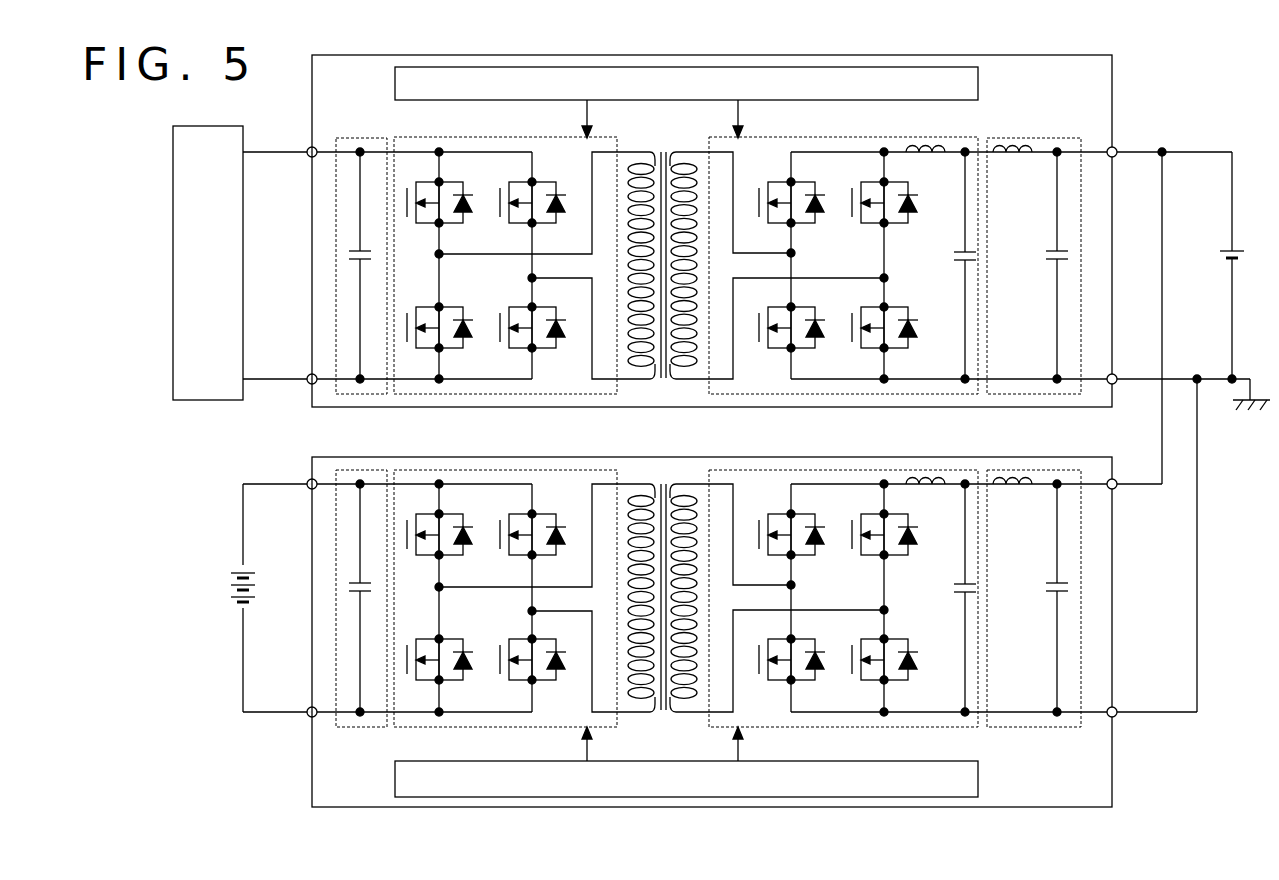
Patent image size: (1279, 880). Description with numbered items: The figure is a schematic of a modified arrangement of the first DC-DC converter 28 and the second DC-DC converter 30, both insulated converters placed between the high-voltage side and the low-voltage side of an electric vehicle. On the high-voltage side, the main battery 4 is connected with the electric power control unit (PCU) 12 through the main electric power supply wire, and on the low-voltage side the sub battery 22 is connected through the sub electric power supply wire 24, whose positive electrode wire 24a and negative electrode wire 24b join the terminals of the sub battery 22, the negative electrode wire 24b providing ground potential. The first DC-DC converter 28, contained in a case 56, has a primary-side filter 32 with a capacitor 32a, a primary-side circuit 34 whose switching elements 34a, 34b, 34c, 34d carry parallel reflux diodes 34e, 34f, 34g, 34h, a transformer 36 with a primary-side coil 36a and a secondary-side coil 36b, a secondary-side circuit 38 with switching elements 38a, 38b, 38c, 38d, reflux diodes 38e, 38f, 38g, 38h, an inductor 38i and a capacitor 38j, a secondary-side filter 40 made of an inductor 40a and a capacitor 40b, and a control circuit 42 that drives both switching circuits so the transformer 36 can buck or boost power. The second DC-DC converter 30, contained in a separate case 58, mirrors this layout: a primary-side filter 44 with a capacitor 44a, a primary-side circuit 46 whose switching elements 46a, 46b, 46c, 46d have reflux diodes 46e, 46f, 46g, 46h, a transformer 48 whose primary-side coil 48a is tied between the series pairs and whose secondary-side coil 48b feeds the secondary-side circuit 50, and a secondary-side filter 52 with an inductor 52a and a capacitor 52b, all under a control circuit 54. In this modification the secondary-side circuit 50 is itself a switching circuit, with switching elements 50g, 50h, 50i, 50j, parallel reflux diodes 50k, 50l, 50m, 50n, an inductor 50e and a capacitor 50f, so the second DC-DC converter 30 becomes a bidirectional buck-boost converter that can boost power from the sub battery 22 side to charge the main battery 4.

The main battery 4 is at (240, 568).
The electric power control unit (PCU) 12 is at (208, 126).
The sub battery 22 is at (1240, 251).
The sub electric power supply wire 24 is at (1215, 223).
The positive electrode wire 24a is at (1225, 152).
The negative electrode wire 24b is at (1212, 377).
The first DC-DC converter 28 is at (1125, 85).
The second DC-DC converter 30 is at (1180, 752).
The primary-side filter 32 is at (350, 244).
The capacitor 32a is at (356, 248).
The primary-side circuit 34 is at (518, 269).
The switching element 34a is at (406, 186).
The switching element 34b is at (408, 338).
The switching element 34c is at (500, 186).
The switching element 34d is at (500, 338).
The reflux diode 34e is at (463, 192).
The reflux diode 34f is at (463, 337).
The reflux diode 34g is at (556, 192).
The reflux diode 34h is at (556, 337).
The transformer 36 is at (748, 240).
The primary-side coil 36a is at (630, 166).
The secondary-side coil 36b is at (692, 166).
The secondary-side circuit 38 is at (857, 264).
The switching element 38a is at (760, 186).
The switching element 38b is at (760, 338).
The switching element 38c is at (852, 186).
The switching element 38d is at (853, 338).
The reflux diode 38e is at (815, 192).
The reflux diode 38f is at (815, 337).
The reflux diode 38g is at (908, 192).
The reflux diode 38h is at (908, 337).
The inductor 38i is at (928, 147).
The capacitor 38j is at (962, 248).
The secondary-side filter 40 is at (1047, 244).
The inductor 40a is at (1012, 147).
The capacitor 40b is at (1052, 248).
The control circuit 42 is at (978, 84).
The primary-side filter 44 is at (348, 574).
The capacitor 44a is at (356, 580).
The primary-side circuit 46 is at (514, 591).
The switching element 46a is at (406, 518).
The switching element 46b is at (408, 670).
The switching element 46c is at (500, 518).
The switching element 46d is at (500, 670).
The reflux diode 46e is at (463, 524).
The reflux diode 46f is at (463, 669).
The reflux diode 46g is at (556, 524).
The reflux diode 46h is at (556, 669).
The transformer 48 is at (747, 565).
The primary-side coil 48a is at (630, 498).
The secondary-side coil 48b is at (690, 498).
The secondary-side circuit 50 is at (866, 591).
The inductor 50e is at (928, 480).
The capacitor 50f is at (962, 580).
The switching element 50g is at (760, 518).
The switching element 50h is at (760, 670).
The switching element 50i is at (852, 518).
The switching element 50j is at (853, 670).
The reflux diode 50k is at (815, 524).
The reflux diode 50l is at (815, 669).
The reflux diode 50m is at (908, 524).
The reflux diode 50n is at (908, 669).
The secondary-side filter 52 is at (1050, 574).
The inductor 52a is at (1015, 478).
The capacitor 52b is at (1052, 580).
The control circuit 54 is at (978, 778).
The case 56 is at (1115, 130).
The case 58 is at (1112, 778).